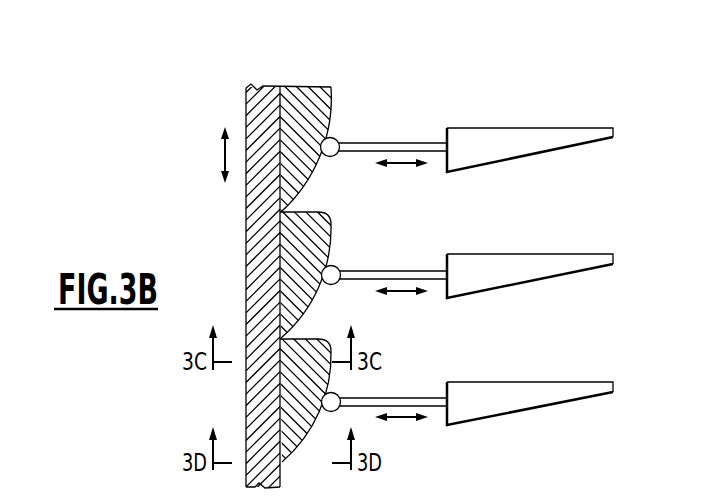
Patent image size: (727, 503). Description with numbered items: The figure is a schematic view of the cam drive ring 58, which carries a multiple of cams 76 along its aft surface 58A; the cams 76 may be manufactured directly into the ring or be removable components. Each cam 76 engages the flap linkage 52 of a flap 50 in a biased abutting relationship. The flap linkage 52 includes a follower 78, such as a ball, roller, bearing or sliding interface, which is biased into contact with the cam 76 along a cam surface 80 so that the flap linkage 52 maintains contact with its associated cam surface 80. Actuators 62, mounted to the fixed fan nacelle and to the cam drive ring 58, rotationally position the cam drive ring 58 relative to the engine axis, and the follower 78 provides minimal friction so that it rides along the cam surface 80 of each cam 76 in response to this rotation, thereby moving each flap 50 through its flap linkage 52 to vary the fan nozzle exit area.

The flap 50 is at (537, 137).
The flap linkage 52 is at (399, 142).
The cam drive ring 58 is at (273, 77).
The aft surface 58A is at (281, 210).
The actuator 62 is at (222, 152).
The cam 76 is at (321, 106).
The follower 78 is at (336, 157).
The cam surface 80 is at (305, 305).